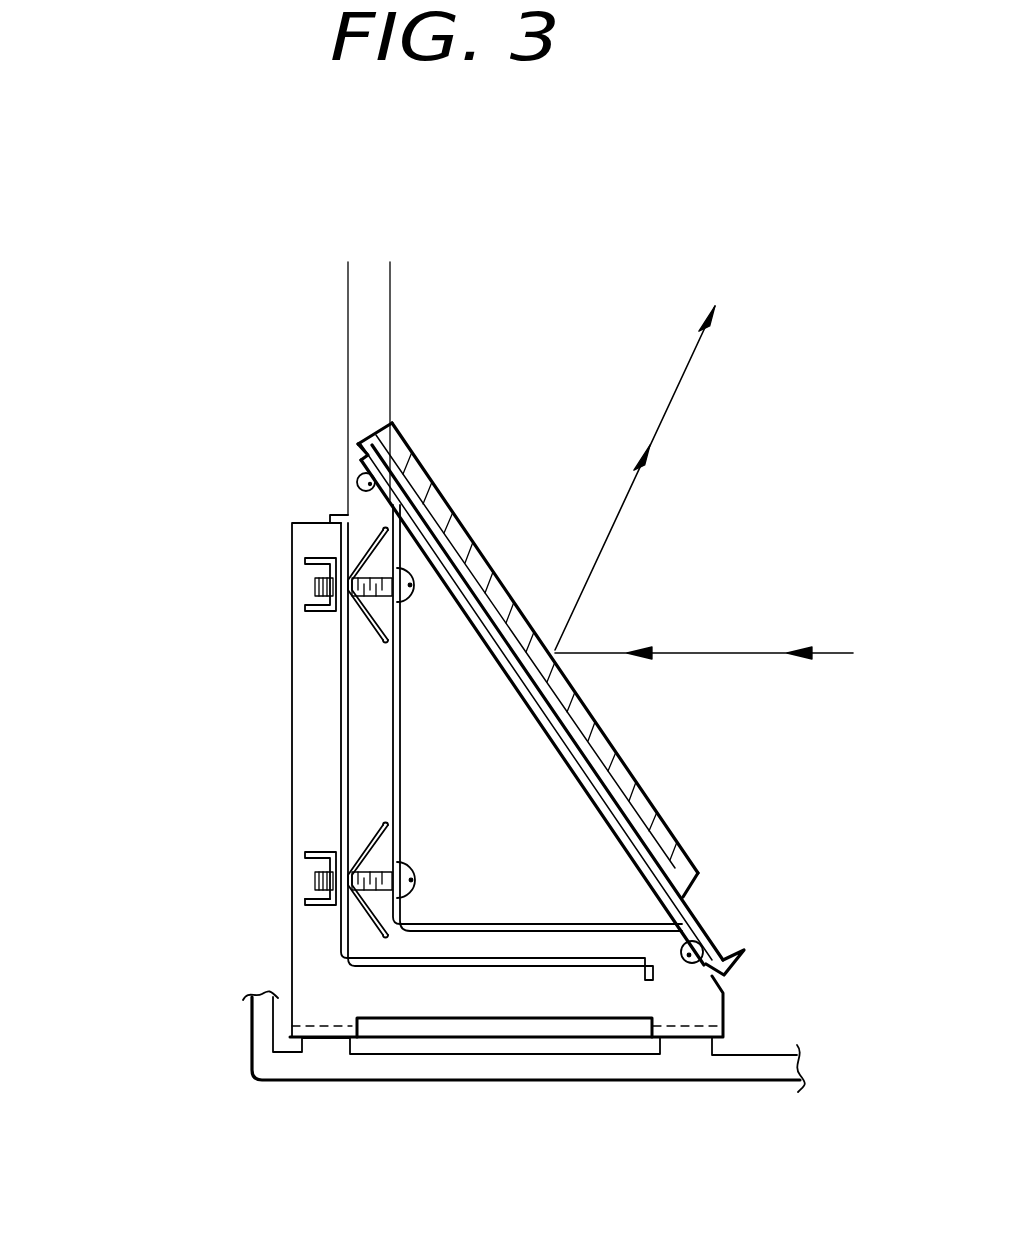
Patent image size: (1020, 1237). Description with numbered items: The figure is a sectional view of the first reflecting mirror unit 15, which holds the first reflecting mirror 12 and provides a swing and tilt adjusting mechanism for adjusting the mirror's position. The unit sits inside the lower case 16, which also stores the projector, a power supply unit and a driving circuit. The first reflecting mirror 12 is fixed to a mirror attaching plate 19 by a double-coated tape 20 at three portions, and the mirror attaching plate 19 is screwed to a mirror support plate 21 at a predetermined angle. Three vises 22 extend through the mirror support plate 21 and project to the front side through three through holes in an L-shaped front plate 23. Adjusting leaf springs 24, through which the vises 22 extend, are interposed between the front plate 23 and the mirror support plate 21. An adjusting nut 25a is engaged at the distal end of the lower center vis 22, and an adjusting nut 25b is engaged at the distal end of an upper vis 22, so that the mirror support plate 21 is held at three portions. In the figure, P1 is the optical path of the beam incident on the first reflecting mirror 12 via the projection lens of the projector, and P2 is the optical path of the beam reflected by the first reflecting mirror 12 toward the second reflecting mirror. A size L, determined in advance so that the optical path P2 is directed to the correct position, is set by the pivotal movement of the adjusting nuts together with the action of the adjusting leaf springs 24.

The first reflecting mirror 12 is at (640, 798).
The first reflecting mirror unit 15 is at (510, 336).
The lower case 16 is at (698, 1068).
The mirror attaching plate 19 is at (743, 952).
The double-coated tape 20 is at (673, 868).
The mirror support plate 21 is at (555, 935).
The vis 22 is at (318, 885).
The L-shaped front plate 23 is at (420, 963).
The adjusting leaf spring 24 is at (372, 910).
The adjusting nut 25a is at (317, 908).
The adjusting nut 25b is at (196, 761).
The optical path of incident beam P1 is at (736, 652).
The optical path of reflected beam P2 is at (685, 395).
The size L is at (443, 280).